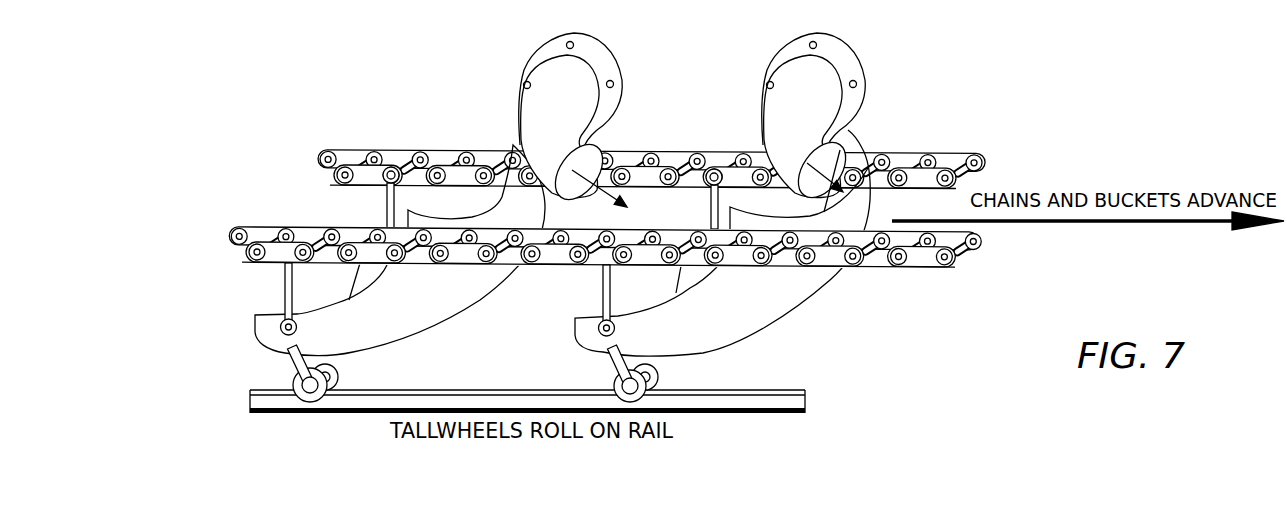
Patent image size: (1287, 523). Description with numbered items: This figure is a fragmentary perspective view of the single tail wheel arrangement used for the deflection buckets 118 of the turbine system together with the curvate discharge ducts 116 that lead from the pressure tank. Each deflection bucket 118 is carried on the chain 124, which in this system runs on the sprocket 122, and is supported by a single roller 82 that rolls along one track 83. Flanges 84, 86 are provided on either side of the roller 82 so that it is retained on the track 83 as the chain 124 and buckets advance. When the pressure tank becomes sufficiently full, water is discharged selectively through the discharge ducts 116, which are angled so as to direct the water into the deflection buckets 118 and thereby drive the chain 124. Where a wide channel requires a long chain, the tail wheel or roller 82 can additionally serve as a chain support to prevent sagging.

The roller 82 is at (292, 383).
The track 83 is at (729, 395).
The flange 84 is at (318, 403).
The flange 86 is at (330, 372).
The discharge duct 116 is at (813, 103).
The deflection bucket 118 is at (810, 307).
The sprocket 122 is at (354, 165).
The chain 124 is at (284, 203).